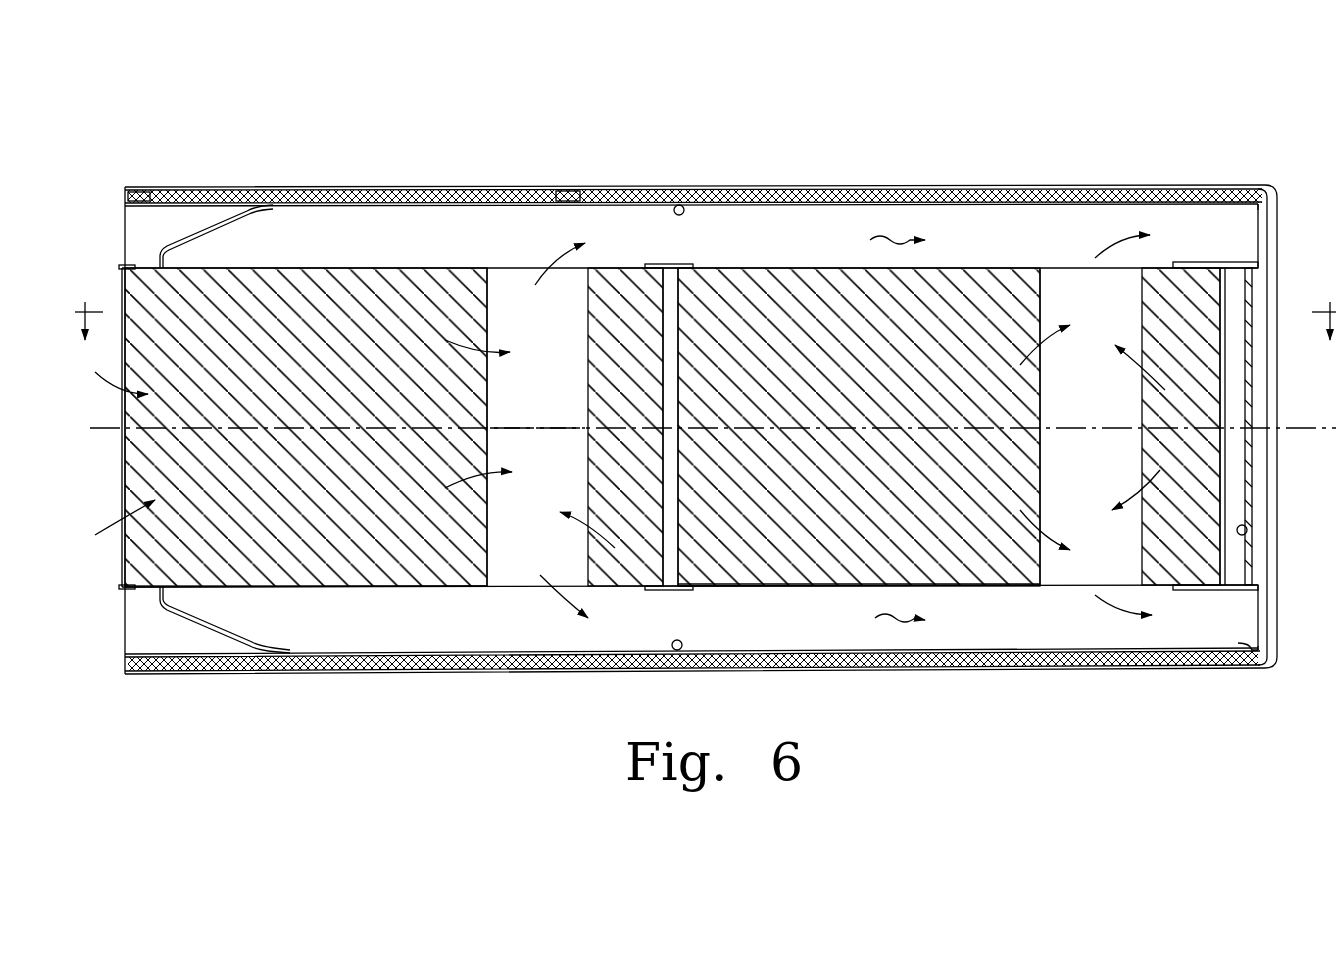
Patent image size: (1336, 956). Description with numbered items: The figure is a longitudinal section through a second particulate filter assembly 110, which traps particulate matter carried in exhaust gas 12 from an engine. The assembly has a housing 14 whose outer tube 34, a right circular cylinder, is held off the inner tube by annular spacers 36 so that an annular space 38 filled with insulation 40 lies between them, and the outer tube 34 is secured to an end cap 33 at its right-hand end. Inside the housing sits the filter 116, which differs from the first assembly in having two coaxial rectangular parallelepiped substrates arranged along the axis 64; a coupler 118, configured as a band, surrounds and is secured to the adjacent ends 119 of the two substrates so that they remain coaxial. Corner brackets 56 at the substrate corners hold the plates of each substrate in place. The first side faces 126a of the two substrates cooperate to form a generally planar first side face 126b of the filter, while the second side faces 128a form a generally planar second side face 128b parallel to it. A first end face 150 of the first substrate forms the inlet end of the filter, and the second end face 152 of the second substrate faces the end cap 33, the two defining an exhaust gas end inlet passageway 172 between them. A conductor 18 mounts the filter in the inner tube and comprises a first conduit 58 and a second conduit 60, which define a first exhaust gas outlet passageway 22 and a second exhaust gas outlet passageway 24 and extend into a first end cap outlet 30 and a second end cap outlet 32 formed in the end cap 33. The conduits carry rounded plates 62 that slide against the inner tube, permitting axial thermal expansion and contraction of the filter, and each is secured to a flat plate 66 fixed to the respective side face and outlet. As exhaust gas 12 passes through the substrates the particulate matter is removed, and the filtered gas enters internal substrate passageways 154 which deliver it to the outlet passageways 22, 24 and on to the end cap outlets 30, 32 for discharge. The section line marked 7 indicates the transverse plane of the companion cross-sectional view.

The second particulate filter assembly 110 is at (268, 108).
The annular spacers 36 is at (128, 186).
The first conduit 58 is at (198, 222).
The annular space 38 is at (318, 186).
The outer tube 34 is at (447, 186).
The first exhaust gas outlet passageway 22 is at (680, 204).
The filter 116 is at (1018, 258).
The first end cap outlet 30 is at (1272, 198).
The first side faces 126a is at (290, 252).
The adjacent ends 119 is at (637, 280).
The coupler 118 is at (670, 264).
The first side face 126b is at (748, 262).
The exhaust gas 12 is at (870, 242).
The rounded plates 62 is at (1210, 205).
The flat plate 66 is at (1298, 262).
The corner bracket 56 is at (120, 267).
The section line 7- 7 is at (705, 312).
The first end face 150 is at (122, 432).
The internal substrate passageways 154 is at (492, 418).
The axis 64 is at (535, 432).
The second end face 152 is at (1255, 418).
The end cap 33 is at (1268, 450).
The exhaust gas end inlet passageway 172 is at (1250, 530).
The second end cap outlet 32 is at (1247, 612).
The second side faces 128a is at (355, 590).
The second side face 128b is at (722, 596).
The conductor 18 is at (173, 628).
The second conduit 60 is at (198, 628).
The housing 14 is at (358, 680).
The second exhaust gas outlet passageway 24 is at (678, 651).
The insulation 40 is at (965, 670).